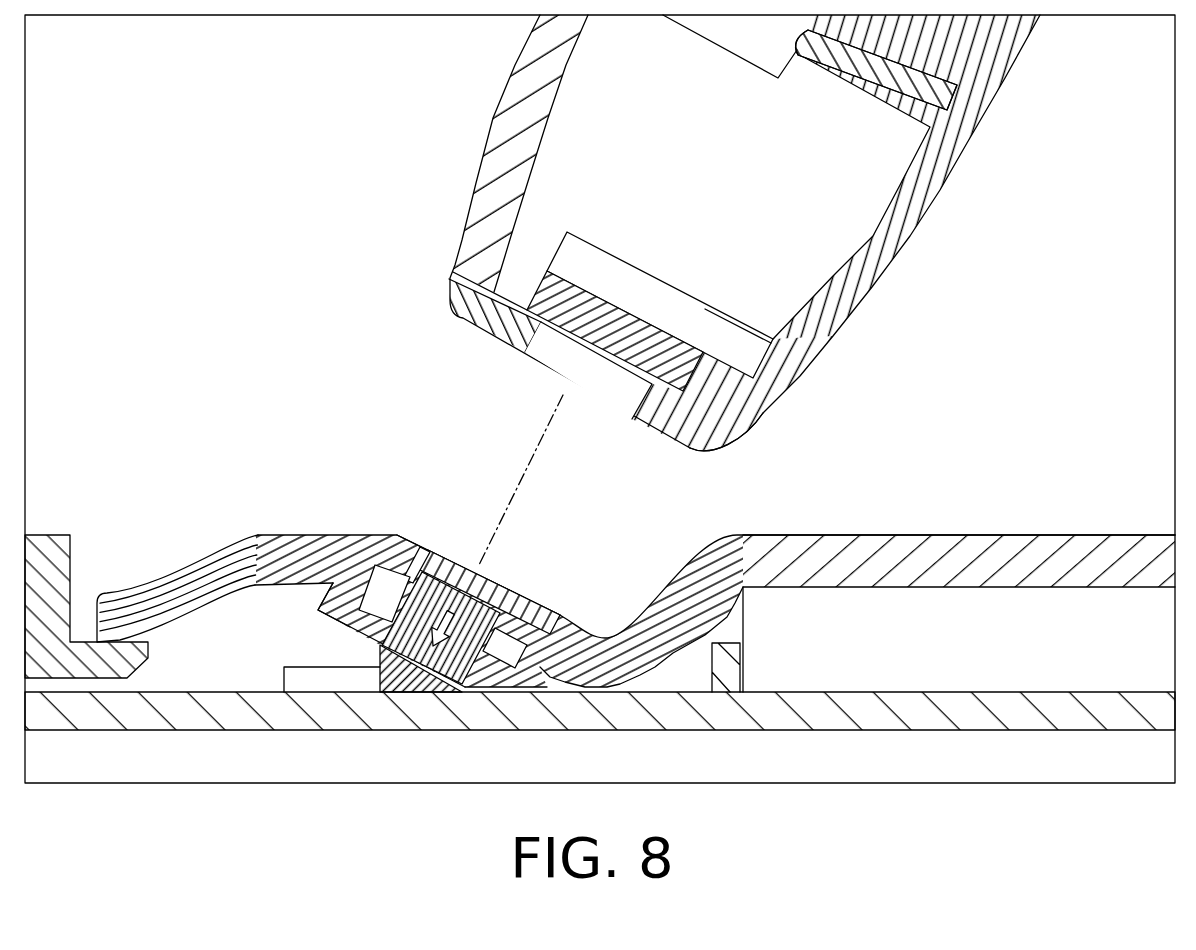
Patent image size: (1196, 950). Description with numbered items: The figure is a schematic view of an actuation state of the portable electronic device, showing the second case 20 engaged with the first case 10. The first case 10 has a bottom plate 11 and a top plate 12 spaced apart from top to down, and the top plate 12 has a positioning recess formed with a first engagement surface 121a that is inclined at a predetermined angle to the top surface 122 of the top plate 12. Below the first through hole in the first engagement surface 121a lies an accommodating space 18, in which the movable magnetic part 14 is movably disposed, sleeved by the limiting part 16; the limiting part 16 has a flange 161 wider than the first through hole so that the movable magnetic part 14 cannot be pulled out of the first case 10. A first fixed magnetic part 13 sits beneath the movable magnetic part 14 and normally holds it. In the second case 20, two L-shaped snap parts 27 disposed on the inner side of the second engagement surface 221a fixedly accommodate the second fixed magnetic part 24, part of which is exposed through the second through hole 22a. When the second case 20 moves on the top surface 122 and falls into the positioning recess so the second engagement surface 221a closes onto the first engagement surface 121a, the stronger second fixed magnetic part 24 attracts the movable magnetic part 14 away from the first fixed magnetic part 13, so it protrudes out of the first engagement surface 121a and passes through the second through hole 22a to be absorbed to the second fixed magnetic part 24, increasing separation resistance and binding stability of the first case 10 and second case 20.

The first case 10 is at (93, 535).
The bottom plate 11 is at (235, 718).
The top plate 12 is at (1008, 555).
The first engagement surface 121a is at (543, 603).
The top surface 122 is at (1118, 533).
The first fixed magnetic part 13 is at (415, 693).
The movable magnetic part 14 is at (466, 565).
The limiting part 16 is at (446, 552).
The flange 161 is at (352, 625).
The accommodating space 18 is at (389, 588).
The second case 20 is at (967, 143).
The second through hole 22a is at (576, 388).
The second engagement surface 221a is at (653, 436).
The second fixed magnetic part 24 is at (614, 305).
The snap parts 27 is at (665, 302).